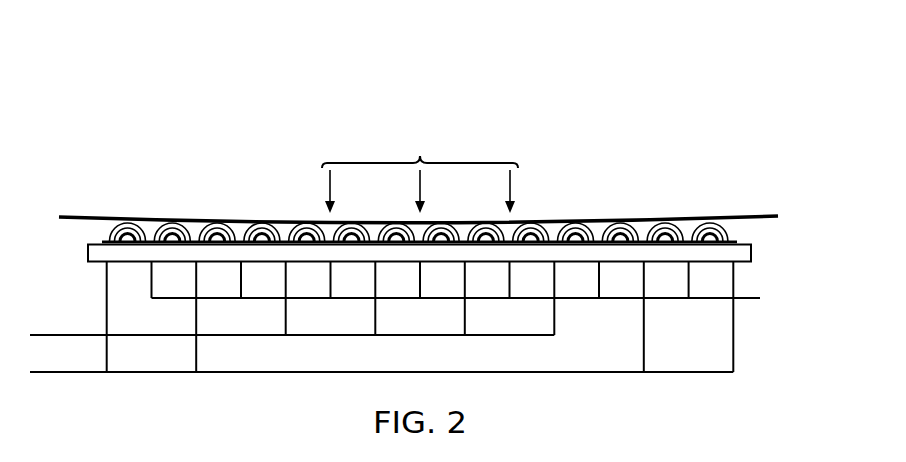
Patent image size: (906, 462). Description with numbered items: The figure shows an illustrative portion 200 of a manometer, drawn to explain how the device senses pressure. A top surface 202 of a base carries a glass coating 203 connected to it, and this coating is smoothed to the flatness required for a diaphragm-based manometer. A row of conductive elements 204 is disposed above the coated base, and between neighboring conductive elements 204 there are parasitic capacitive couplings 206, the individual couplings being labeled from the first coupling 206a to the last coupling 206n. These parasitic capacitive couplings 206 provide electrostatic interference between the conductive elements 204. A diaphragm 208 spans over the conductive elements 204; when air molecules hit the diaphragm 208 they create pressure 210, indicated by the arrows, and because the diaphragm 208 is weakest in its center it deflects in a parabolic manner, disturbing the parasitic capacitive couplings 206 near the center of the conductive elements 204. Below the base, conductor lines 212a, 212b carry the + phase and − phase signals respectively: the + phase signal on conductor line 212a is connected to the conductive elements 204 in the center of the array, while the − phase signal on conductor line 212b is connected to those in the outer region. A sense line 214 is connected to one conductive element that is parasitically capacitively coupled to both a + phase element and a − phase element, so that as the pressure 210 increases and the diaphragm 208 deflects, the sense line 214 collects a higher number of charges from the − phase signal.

The portion of a manometer 200 is at (604, 144).
The top surface of a base 202 is at (87, 262).
The glass coating 203 is at (100, 233).
The conductive elements 204 is at (101, 230).
The parasitic capacitive couplings 206 is at (754, 232).
The parasitic capacitive coupling 206a is at (148, 218).
The parasitic capacitive coupling 206n is at (692, 226).
The diaphragm 208 is at (748, 215).
The pressure 210 is at (420, 171).
The conductor line 212a is at (150, 337).
The conductor line 212b is at (687, 373).
The sense line 214 is at (750, 300).